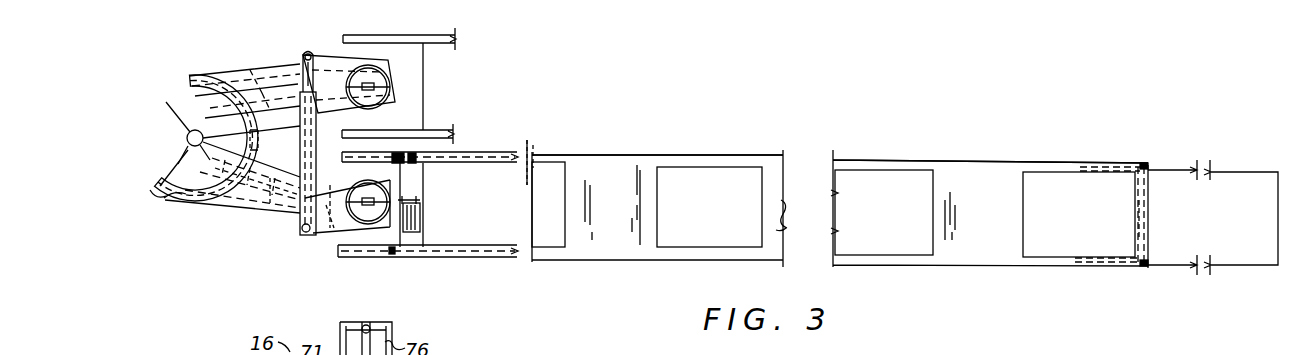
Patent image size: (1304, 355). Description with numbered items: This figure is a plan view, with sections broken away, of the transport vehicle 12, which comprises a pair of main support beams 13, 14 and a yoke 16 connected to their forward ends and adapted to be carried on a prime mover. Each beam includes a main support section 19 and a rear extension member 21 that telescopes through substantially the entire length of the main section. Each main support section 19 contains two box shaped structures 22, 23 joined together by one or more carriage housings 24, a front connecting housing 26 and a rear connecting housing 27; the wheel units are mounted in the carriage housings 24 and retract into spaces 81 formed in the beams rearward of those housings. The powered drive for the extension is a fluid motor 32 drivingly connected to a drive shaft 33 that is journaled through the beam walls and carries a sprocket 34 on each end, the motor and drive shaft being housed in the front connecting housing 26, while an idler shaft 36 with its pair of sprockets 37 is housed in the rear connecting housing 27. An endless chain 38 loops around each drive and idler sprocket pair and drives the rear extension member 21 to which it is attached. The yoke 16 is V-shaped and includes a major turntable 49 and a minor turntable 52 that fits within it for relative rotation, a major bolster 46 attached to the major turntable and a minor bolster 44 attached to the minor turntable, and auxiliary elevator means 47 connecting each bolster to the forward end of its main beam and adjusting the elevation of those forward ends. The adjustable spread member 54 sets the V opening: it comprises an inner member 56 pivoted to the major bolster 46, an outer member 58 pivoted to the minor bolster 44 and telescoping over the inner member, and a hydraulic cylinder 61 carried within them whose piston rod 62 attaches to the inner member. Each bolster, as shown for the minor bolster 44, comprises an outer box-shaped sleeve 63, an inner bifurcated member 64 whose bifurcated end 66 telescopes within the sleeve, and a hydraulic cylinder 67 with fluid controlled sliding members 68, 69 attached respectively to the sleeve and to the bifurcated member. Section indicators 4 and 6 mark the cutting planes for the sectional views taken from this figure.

The conveyor section 4 is at (1278, 224).
The spacing gap 6 is at (512, 185).
The transport vehicle 12 is at (640, 132).
The main support beam 13 is at (453, 74).
The main support beam 14 is at (566, 273).
The yoke 16 is at (250, 262).
The main support section 19 is at (974, 166).
The rear extension member 21 is at (1252, 172).
The box shaped structure 22 is at (566, 150).
The box shaped structure 23 is at (546, 248).
The carriage housing 24 is at (627, 224).
The front connecting housing 26 is at (446, 148).
The rear connecting housing 27 is at (1154, 198).
The fluid motor 32 is at (420, 226).
The drive shaft 33 is at (416, 198).
The sprocket 34 is at (414, 164).
The idler shaft 36 is at (1140, 216).
The sprocket 37 is at (1144, 162).
The endless chain 38 is at (446, 258).
The minor bolster 44 is at (278, 214).
The major bolster 46 is at (240, 76).
The auxiliary elevator means 47 is at (392, 88).
The major turntable 49 is at (168, 188).
The minor turntable 52 is at (138, 160).
The adjustable spread member 54 is at (352, 114).
The inner member 56 is at (343, 52).
The outer member 58 is at (300, 248).
The hydraulic cylinder 61 is at (299, 146).
The piston rod 62 is at (302, 58).
The outer box-shaped sleeve 63 is at (217, 208).
The inner bifurcated member 64 is at (334, 228).
The bifurcated end 66 is at (192, 196).
The hydraulic cylinder 67 is at (255, 229).
The sliding member 68 is at (140, 208).
The sliding member 69 is at (306, 232).
The space 81 is at (715, 209).